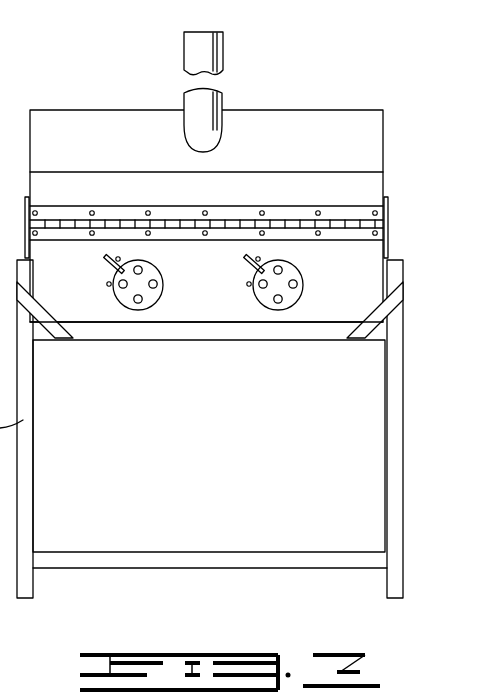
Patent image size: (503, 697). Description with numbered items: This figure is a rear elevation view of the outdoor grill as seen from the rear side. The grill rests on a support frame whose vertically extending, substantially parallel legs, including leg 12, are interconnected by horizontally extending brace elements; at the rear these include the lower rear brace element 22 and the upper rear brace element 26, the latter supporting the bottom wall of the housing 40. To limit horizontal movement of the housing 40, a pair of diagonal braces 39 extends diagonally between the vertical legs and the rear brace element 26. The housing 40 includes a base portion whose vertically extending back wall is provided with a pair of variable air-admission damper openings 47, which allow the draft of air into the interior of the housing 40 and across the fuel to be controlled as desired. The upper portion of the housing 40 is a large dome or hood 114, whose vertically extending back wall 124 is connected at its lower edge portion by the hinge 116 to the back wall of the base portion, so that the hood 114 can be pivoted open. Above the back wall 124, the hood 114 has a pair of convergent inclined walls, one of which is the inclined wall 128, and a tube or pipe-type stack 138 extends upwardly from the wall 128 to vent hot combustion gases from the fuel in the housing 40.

The leg 12 is at (392, 418).
The rear brace element 22 is at (225, 557).
The rear brace element 26 is at (162, 328).
The diagonal brace 39 is at (45, 319).
The housing 40 is at (368, 74).
The variable air-admission damper opening 47 is at (128, 299).
The hood 114 is at (262, 98).
The hinge 116 is at (185, 227).
The back wall 124 is at (146, 195).
The inclined wall 128 is at (136, 142).
The stack 138 is at (193, 46).